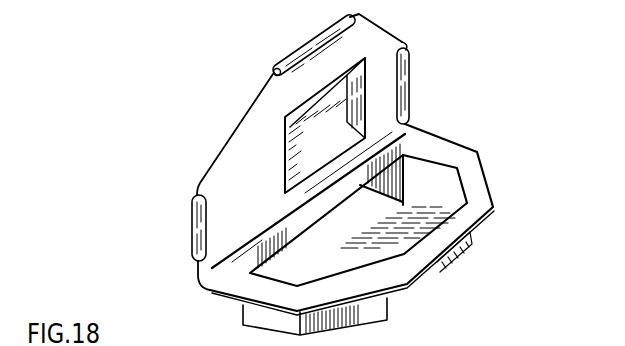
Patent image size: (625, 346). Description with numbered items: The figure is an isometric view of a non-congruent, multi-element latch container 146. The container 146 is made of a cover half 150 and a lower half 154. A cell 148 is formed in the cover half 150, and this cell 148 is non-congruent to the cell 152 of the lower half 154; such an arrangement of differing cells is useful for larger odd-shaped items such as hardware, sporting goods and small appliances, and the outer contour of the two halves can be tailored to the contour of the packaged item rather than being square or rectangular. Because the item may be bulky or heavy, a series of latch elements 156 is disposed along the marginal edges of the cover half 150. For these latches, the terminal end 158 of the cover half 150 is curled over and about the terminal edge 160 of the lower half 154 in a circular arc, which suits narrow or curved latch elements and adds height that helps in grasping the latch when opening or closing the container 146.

The container 146 is at (408, 80).
The cell 148 is at (347, 103).
The cover half 150 is at (223, 162).
The cell 152 is at (432, 176).
The lower half 154 is at (415, 258).
The latch elements 156 is at (192, 232).
The terminal end 158 is at (561, 341).
The terminal edge 160 is at (412, 282).